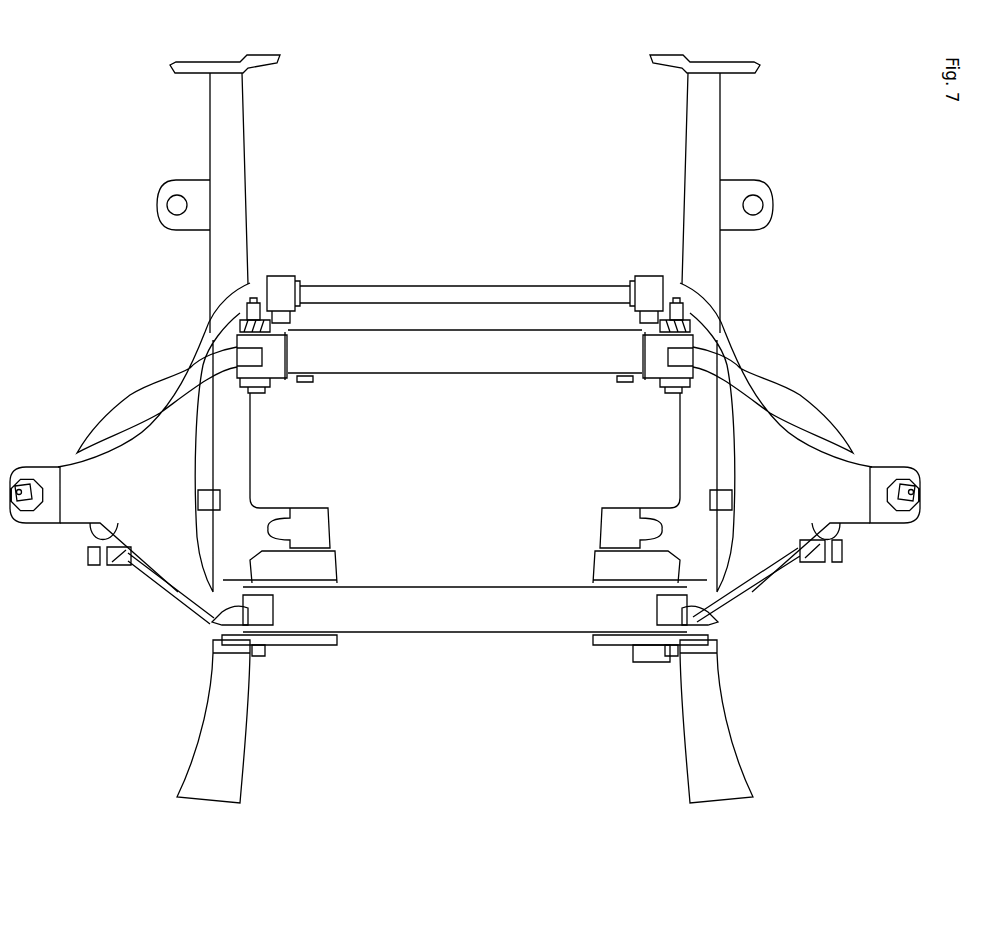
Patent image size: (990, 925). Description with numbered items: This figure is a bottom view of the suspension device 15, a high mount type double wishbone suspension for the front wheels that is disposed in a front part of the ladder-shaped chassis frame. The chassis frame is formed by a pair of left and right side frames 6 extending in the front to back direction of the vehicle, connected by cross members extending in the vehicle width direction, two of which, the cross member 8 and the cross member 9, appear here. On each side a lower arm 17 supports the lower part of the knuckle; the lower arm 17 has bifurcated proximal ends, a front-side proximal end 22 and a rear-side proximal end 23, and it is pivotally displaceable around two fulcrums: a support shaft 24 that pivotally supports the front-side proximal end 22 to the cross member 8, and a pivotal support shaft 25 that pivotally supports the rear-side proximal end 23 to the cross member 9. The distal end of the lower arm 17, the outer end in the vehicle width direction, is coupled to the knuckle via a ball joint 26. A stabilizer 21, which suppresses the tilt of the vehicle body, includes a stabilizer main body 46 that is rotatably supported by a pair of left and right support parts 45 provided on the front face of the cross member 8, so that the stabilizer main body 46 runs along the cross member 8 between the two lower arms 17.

The side frame 6 is at (208, 128).
The cross member 8 is at (419, 337).
The cross member 9 is at (432, 652).
The suspension device 15 is at (853, 428).
The lower arm 17 is at (74, 468).
The stabilizer 21 is at (465, 263).
The front-side proximal end 22 is at (237, 348).
The rear-side proximal end 23 is at (212, 622).
The support shaft 24 is at (250, 303).
The pivotal support shaft 25 is at (260, 655).
The ball joint 26 is at (31, 510).
The support part 45 is at (282, 283).
The stabilizer main body 46 is at (548, 283).